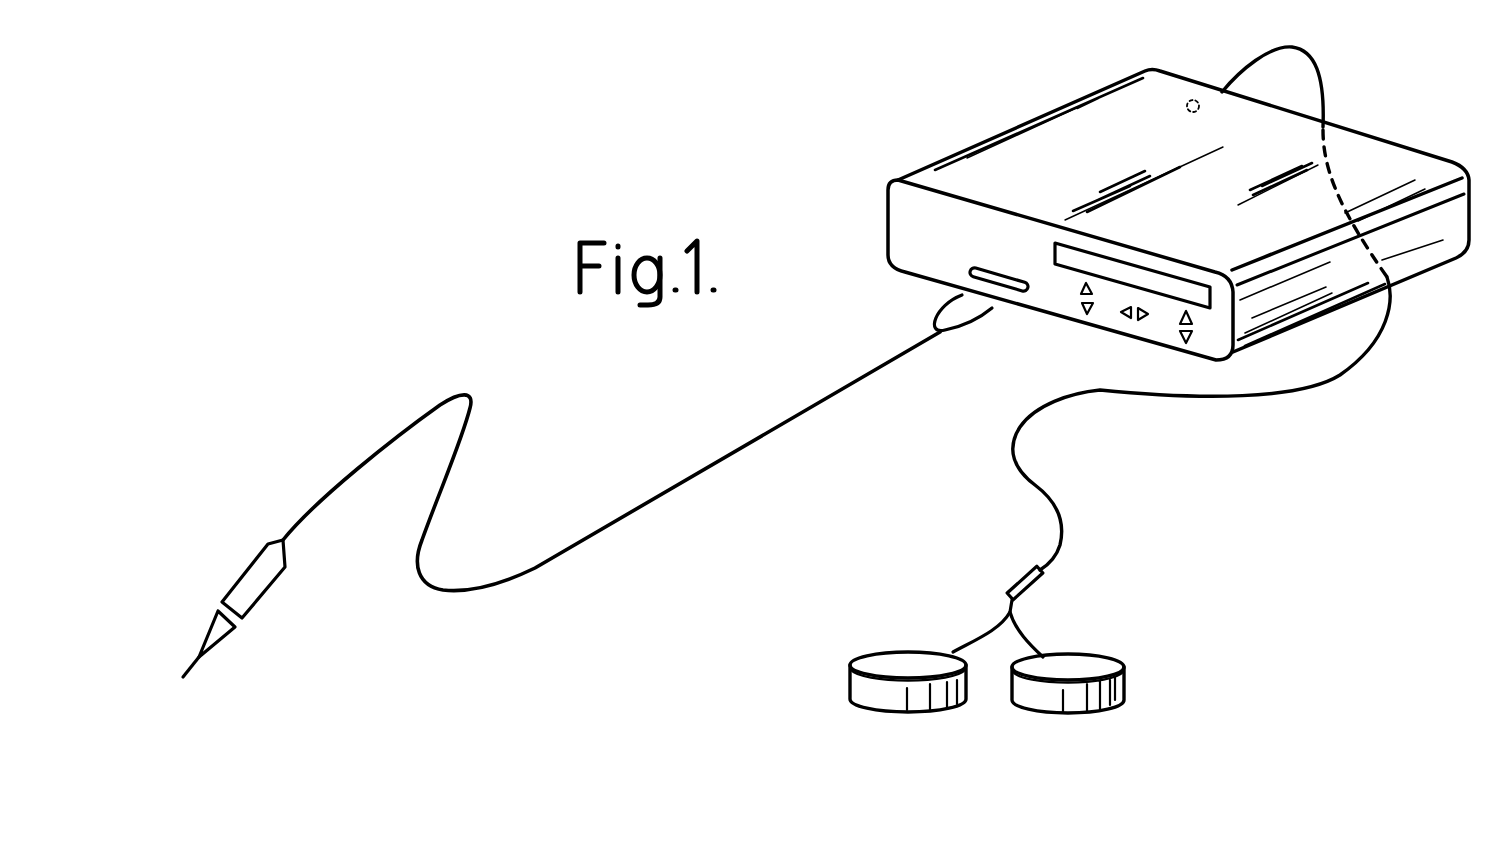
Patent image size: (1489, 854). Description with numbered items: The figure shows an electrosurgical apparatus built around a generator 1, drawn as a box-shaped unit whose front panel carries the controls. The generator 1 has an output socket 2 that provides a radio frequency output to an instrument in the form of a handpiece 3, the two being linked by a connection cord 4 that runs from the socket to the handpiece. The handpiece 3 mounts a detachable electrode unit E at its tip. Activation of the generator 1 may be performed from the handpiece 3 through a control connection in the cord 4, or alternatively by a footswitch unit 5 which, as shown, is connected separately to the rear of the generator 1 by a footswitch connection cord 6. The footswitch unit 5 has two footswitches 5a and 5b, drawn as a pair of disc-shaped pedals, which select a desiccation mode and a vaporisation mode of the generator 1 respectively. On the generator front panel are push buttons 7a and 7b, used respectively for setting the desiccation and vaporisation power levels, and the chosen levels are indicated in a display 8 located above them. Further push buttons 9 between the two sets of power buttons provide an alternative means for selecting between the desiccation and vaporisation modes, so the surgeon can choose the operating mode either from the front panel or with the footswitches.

The generator 1 is at (942, 164).
The output socket 2 is at (962, 273).
The handpiece 3 is at (250, 580).
The connection cord 4 is at (653, 503).
The footswitch unit 5 is at (969, 570).
The footswitch 5a is at (862, 700).
The footswitch 5b is at (1124, 690).
The footswitch connection cord 6 is at (1240, 400).
The push button 7a is at (1058, 316).
The push button 7b is at (1177, 388).
The display 8 is at (1153, 270).
The push buttons 9 is at (1124, 336).
The electrode unit E is at (219, 668).